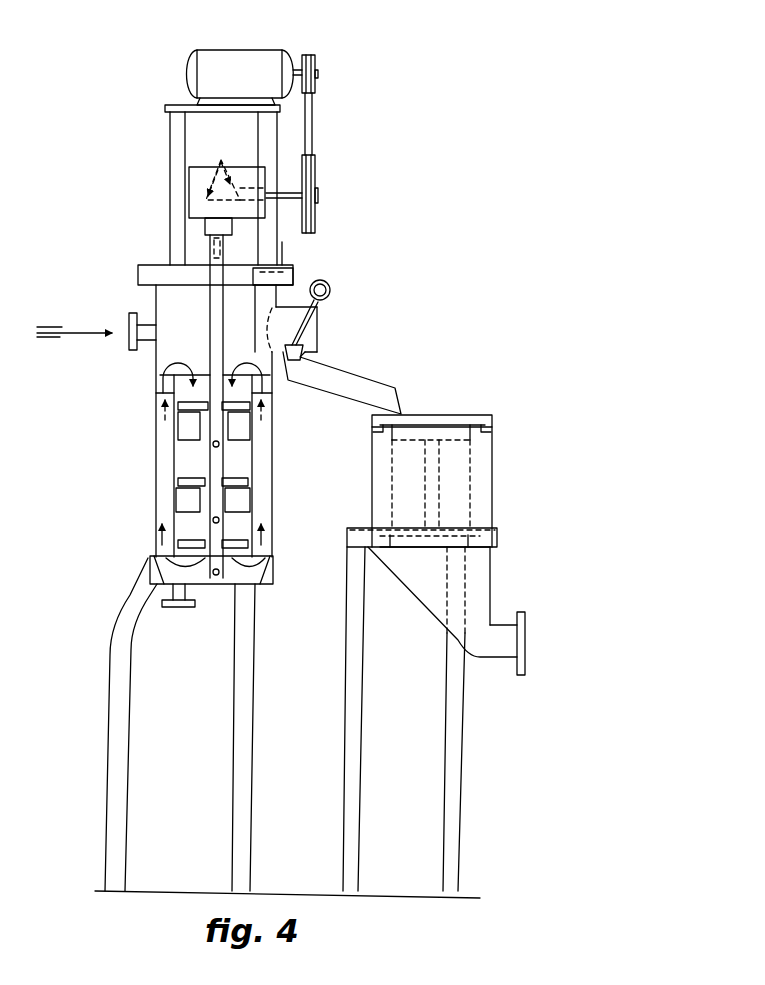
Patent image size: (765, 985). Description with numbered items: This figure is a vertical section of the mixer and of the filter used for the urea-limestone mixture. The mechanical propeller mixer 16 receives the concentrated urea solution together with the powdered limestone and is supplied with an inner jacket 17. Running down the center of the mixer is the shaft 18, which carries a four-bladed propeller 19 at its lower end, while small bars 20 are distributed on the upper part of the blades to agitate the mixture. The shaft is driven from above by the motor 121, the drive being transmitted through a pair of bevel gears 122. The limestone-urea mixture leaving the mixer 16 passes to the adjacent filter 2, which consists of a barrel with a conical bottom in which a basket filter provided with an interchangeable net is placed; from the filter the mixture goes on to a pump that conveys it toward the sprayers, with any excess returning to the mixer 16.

The motor 121 is at (252, 47).
The pair of bevel gears 122 is at (227, 184).
The shaft 18 is at (207, 322).
The mechanical propeller mixer 16 is at (153, 413).
The inner jacket 17 is at (256, 462).
The small bars 20 is at (190, 479).
The 4-bladed propeller 19 is at (241, 497).
The filter 2 is at (505, 470).